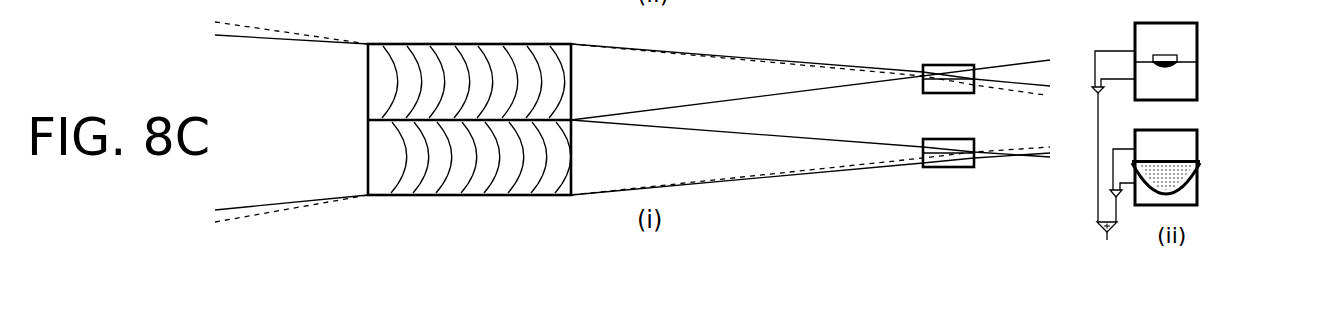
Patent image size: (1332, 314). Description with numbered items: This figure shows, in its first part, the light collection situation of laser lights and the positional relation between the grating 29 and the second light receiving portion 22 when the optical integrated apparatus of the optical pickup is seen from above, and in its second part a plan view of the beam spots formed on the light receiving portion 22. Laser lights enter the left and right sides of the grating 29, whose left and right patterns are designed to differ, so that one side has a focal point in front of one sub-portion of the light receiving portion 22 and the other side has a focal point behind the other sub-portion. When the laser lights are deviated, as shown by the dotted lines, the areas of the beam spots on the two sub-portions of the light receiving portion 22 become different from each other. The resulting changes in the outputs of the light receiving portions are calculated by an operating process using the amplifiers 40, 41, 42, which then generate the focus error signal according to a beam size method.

The second light receiving portion 22 is at (1222, 165).
The grating 29 is at (500, 44).
The amplifier 40 is at (1095, 93).
The amplifier 41 is at (1124, 198).
The amplifier 42 is at (1100, 233).